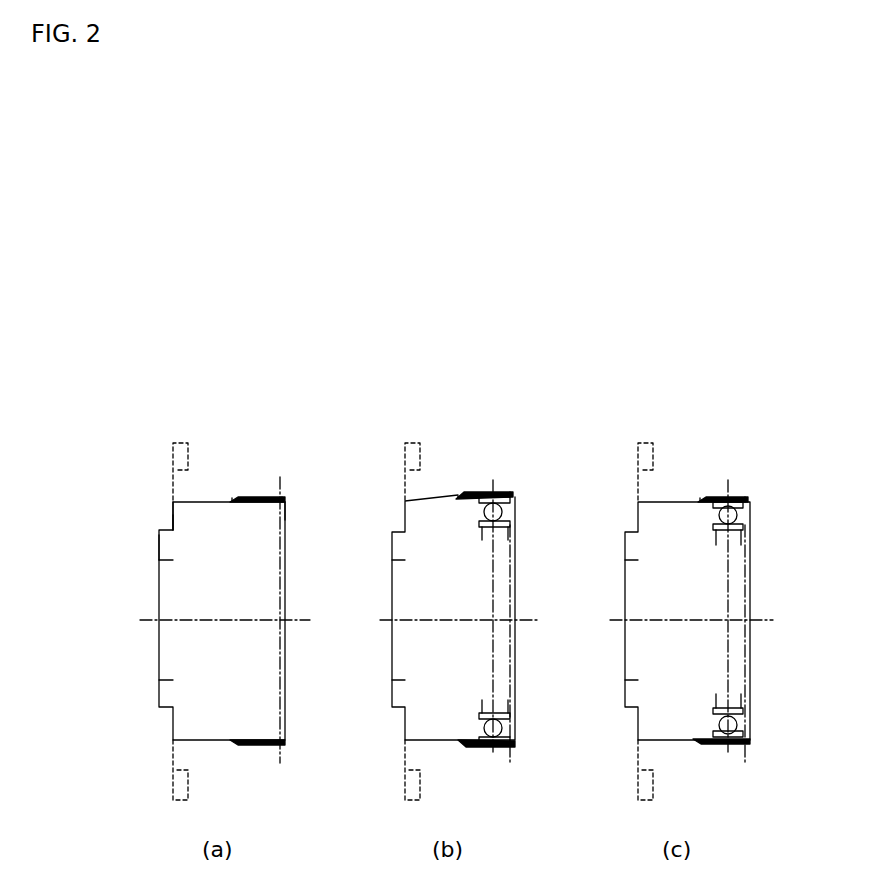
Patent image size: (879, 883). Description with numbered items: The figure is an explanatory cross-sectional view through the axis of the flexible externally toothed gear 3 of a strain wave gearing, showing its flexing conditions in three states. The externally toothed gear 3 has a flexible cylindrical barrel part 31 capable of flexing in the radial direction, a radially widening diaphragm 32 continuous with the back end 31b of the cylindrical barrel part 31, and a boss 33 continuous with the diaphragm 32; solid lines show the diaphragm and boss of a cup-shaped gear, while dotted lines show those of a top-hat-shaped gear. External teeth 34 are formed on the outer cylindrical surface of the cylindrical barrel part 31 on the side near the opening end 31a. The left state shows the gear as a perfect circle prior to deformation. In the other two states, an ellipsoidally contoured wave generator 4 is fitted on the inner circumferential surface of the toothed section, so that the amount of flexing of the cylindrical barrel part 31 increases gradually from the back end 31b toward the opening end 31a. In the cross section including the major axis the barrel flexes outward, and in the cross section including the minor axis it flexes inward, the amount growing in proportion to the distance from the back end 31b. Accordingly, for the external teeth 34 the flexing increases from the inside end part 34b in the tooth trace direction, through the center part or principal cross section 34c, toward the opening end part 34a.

The flexible externally toothed gear 3 is at (199, 439).
The cylindrical barrel part 31 is at (210, 505).
The opening end 31a is at (285, 500).
The back end 31b is at (173, 500).
The diaphragm 32 is at (172, 522).
The boss 33 is at (165, 546).
The external teeth 34 is at (265, 495).
The opening end part 34a is at (285, 496).
The inside end part 34b is at (242, 497).
The principal cross section 34c is at (493, 496).
The wave generator 4 is at (514, 516).